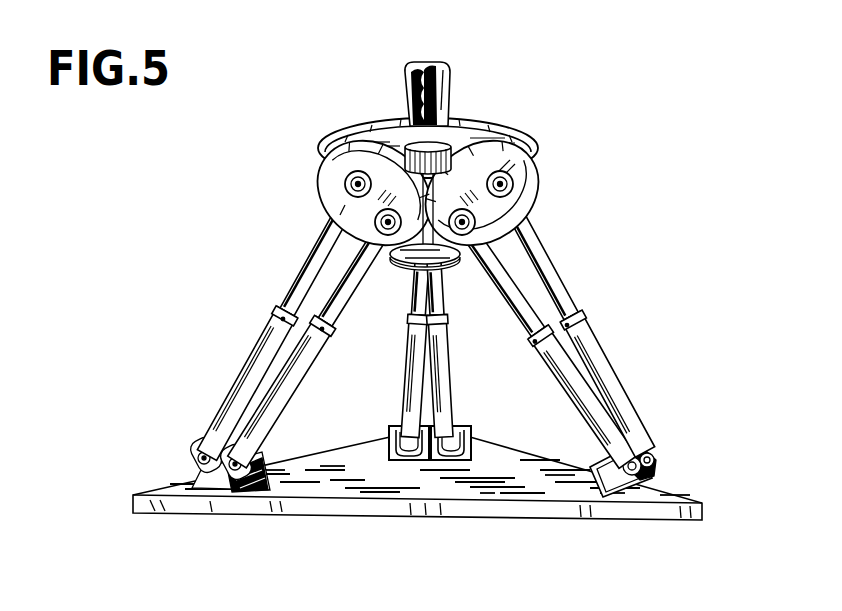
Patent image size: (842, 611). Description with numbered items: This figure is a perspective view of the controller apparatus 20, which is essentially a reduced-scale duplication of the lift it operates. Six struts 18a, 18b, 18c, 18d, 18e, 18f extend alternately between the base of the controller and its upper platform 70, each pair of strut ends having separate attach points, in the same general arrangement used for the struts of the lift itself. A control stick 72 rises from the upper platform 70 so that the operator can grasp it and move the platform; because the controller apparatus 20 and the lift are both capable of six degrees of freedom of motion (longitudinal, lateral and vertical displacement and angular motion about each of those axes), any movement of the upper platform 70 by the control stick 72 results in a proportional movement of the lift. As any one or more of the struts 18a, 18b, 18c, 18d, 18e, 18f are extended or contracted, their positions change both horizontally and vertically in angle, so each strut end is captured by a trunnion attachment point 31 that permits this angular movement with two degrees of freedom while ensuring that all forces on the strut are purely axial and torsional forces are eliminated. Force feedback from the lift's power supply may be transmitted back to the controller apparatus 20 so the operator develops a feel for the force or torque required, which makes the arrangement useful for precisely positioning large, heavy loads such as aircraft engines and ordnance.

The controller apparatus 20 is at (200, 318).
The upper platform 70 is at (322, 138).
The control stick 72 is at (445, 85).
The strut 18a is at (567, 297).
The strut 18b is at (562, 400).
The strut 18c is at (450, 342).
The strut 18d is at (412, 350).
The strut 18e is at (310, 383).
The strut 18f is at (300, 273).
The trunnion attachment point 31 is at (268, 452).